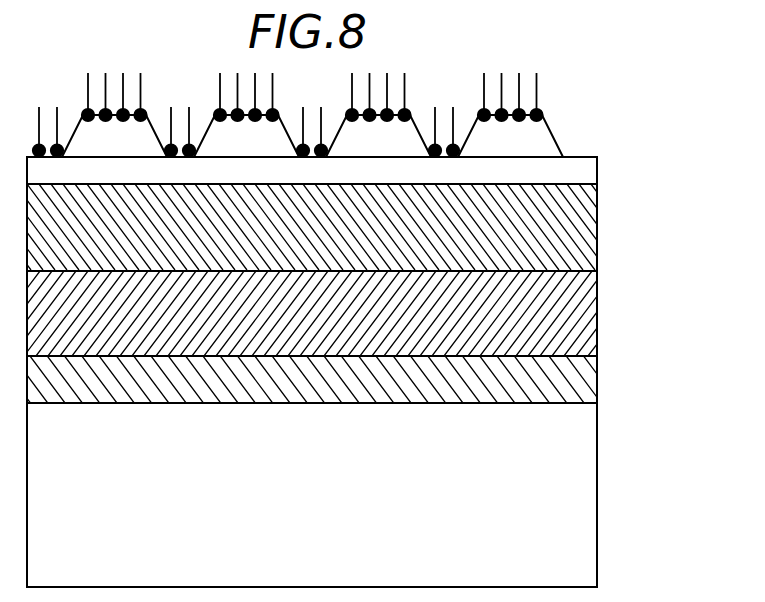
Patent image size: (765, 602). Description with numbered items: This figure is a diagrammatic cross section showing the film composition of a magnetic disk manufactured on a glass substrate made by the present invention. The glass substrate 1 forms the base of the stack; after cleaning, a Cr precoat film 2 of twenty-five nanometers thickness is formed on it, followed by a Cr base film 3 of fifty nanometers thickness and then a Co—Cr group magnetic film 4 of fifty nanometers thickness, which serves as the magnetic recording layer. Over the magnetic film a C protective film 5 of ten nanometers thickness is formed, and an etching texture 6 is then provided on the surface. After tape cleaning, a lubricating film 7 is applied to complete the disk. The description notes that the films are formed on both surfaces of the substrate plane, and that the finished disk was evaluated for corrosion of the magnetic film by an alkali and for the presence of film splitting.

The glass substrate 1 is at (577, 500).
The Cr precoat film 2 is at (582, 382).
The Cr base film 3 is at (580, 323).
The Co—Cr group magnetic film 4 is at (570, 230).
The C protective film 5 is at (570, 172).
The etching texture 6 is at (540, 137).
The lubricating film 7 is at (520, 88).